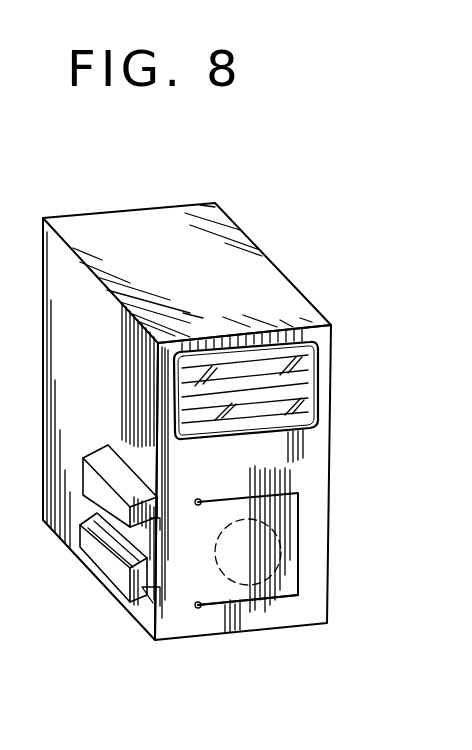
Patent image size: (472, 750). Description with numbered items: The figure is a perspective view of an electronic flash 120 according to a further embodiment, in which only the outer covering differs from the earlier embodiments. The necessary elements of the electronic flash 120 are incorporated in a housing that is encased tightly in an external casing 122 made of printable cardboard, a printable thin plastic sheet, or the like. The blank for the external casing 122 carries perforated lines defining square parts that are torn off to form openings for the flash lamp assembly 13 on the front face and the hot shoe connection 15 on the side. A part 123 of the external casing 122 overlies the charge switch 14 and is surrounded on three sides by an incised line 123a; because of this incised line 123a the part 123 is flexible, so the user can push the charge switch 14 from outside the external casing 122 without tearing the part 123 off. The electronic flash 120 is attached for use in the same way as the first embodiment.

The electronic flash 120 is at (146, 210).
The flash lamp assembly 13 is at (275, 371).
The external casing 122 is at (272, 463).
The part of the external casing 123 is at (267, 521).
The incised line 123a is at (243, 604).
The charge switch 14 is at (283, 553).
The hot shoe connection 15 is at (102, 572).